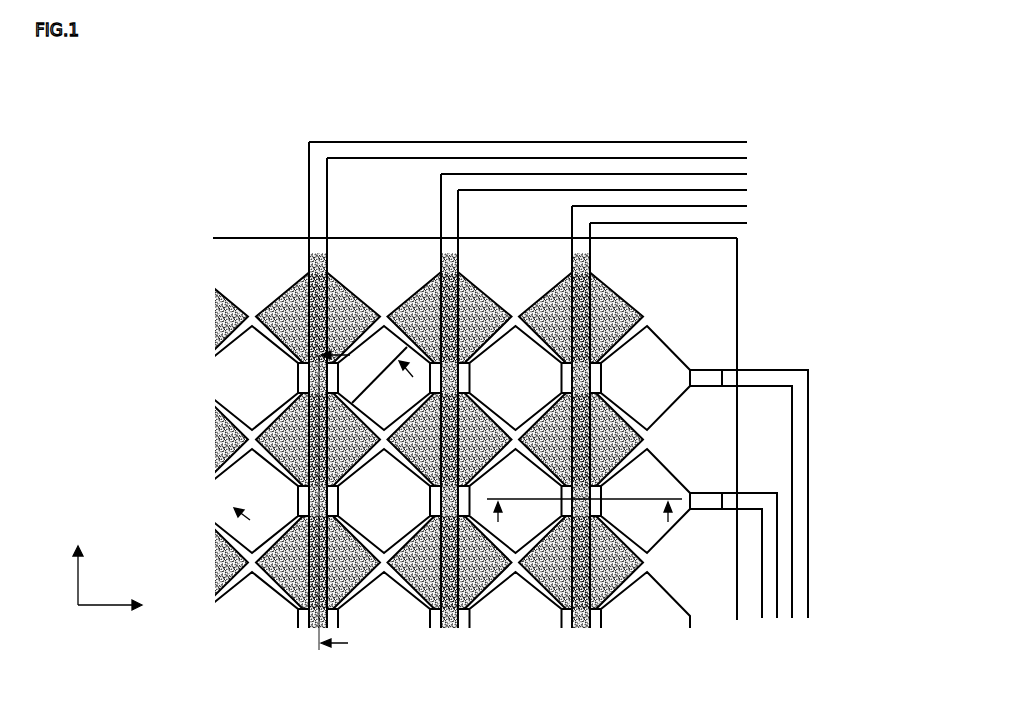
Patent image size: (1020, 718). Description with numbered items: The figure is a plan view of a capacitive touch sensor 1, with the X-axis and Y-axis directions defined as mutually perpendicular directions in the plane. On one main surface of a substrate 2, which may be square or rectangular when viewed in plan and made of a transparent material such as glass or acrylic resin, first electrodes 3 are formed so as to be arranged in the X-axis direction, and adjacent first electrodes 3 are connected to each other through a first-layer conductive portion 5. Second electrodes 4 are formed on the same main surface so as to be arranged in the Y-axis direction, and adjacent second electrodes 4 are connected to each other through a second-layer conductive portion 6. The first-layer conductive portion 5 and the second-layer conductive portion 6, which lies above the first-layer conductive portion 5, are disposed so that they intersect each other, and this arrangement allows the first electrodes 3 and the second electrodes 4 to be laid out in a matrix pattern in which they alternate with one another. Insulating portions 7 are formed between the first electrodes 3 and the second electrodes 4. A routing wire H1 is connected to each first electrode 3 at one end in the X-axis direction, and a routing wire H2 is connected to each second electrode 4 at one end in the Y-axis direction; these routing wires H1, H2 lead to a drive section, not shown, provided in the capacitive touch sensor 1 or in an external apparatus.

The capacitive touch sensor 1 is at (268, 134).
The substrate 2 is at (740, 258).
The first electrode 3 is at (380, 354).
The second electrode 4 is at (572, 310).
The first-layer conductive portion 5 is at (297, 493).
The second-layer conductive portion 6 is at (600, 382).
The insulating portion 7 is at (257, 258).
The routing wire H1 is at (770, 562).
The routing wire H2 is at (606, 152).